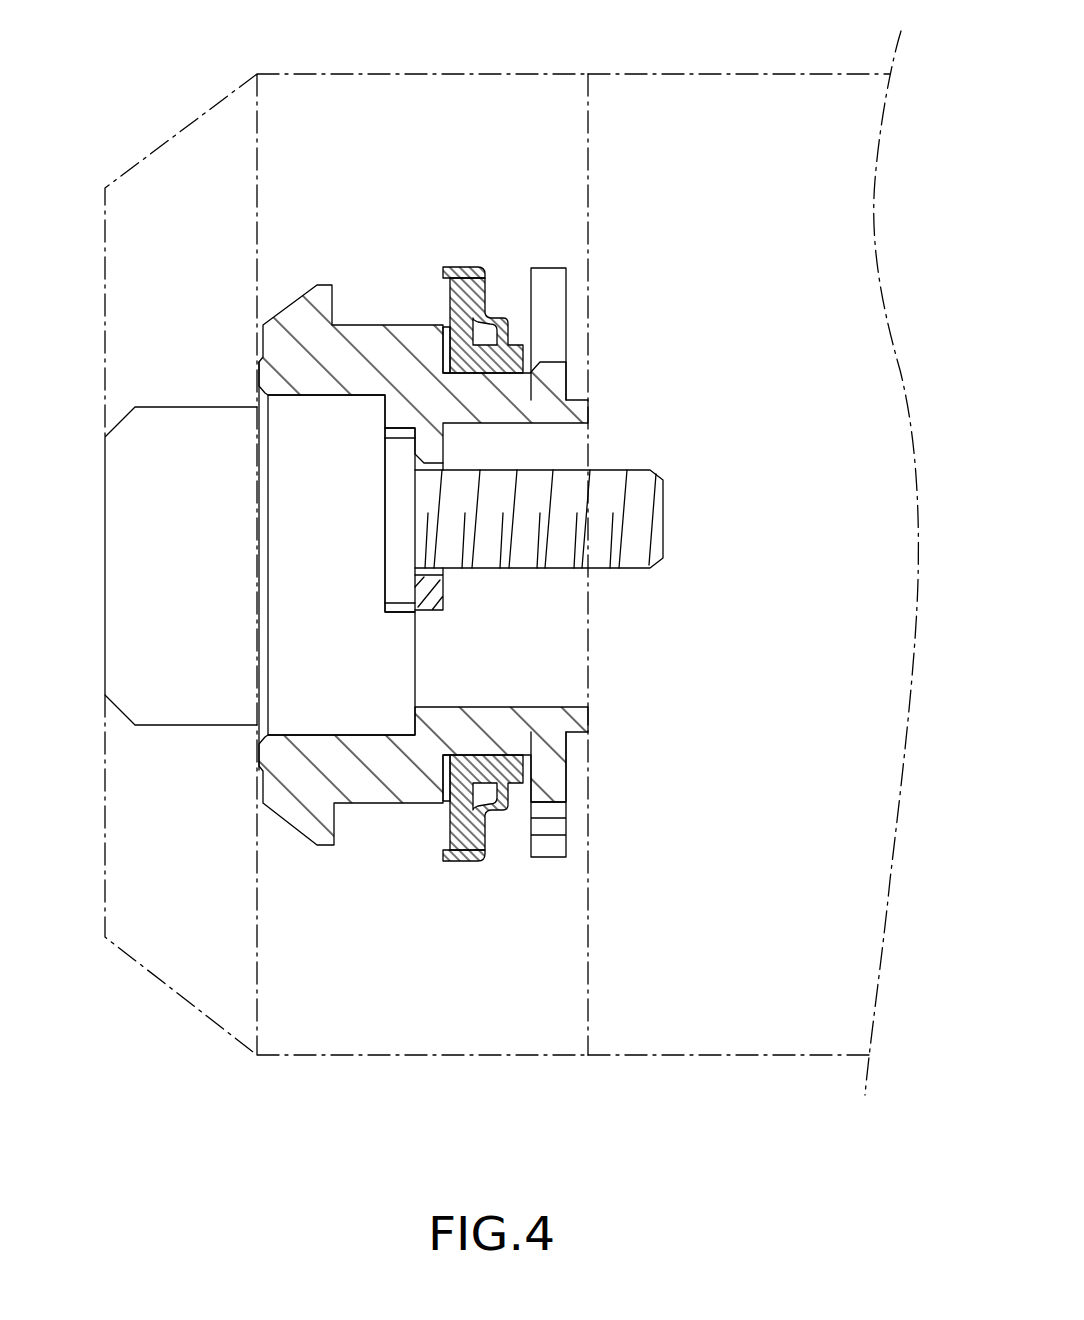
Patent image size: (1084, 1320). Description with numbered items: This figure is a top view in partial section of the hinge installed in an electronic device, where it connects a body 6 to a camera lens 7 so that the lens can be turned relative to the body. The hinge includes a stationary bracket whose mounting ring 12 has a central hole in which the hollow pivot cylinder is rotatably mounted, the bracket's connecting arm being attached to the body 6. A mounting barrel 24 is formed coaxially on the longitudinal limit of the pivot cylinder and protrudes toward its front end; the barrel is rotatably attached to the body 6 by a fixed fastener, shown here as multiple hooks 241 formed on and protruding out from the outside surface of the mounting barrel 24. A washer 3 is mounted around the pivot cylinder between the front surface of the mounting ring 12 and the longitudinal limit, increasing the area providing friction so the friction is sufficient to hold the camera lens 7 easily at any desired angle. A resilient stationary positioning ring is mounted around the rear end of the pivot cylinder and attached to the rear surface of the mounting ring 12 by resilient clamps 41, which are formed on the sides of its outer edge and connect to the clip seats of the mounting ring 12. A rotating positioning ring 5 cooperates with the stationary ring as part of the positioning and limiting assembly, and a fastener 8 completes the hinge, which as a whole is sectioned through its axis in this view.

The washer 3 is at (447, 352).
The rotating positioning ring 5 is at (557, 767).
The body 6 is at (197, 993).
The camera lens 7 is at (753, 1025).
The fastener 8 is at (617, 483).
The mounting ring 12 is at (458, 308).
The mounting barrel 24 is at (295, 712).
The clamps 41 is at (457, 267).
The hooks 241 is at (298, 313).